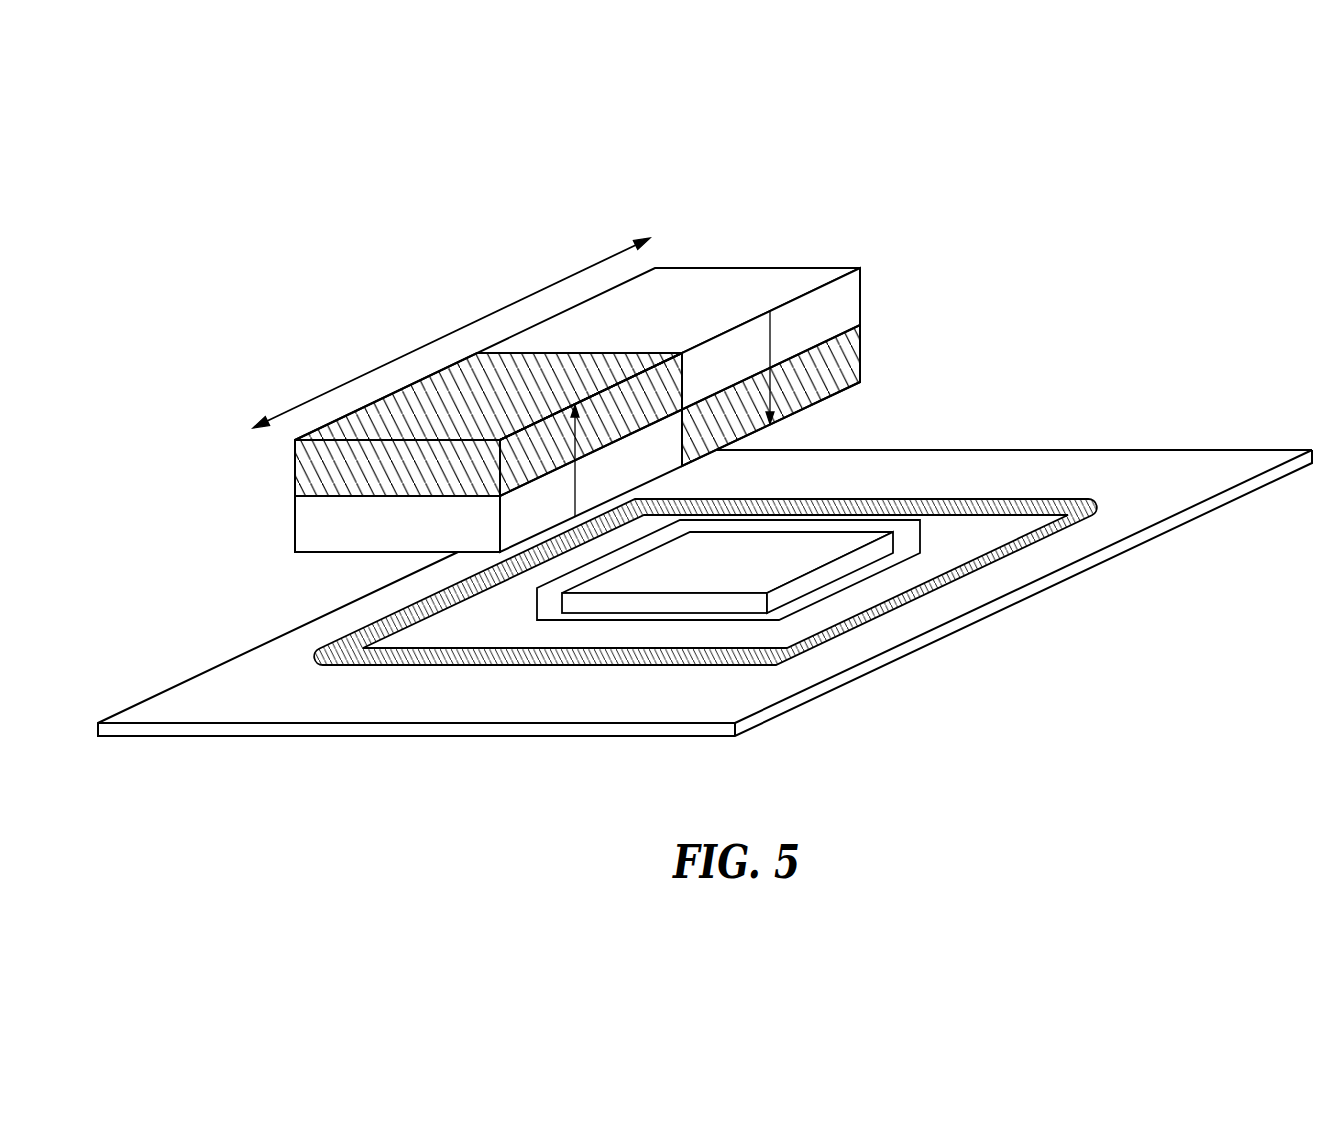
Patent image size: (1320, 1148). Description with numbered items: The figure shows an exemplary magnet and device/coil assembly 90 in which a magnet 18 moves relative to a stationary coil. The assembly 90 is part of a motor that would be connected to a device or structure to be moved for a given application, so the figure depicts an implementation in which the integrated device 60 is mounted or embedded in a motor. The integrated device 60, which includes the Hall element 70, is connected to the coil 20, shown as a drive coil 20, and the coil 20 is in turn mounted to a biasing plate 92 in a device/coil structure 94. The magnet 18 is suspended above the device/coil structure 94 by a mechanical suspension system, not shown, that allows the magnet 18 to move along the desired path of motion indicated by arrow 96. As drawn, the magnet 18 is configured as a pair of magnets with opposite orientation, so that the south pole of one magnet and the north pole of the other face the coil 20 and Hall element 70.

The magnet and device/coil assembly 90 is at (777, 139).
The magnet 18 is at (761, 265).
The arrow 96 is at (534, 291).
The device/coil structure 94 is at (988, 441).
The biasing plate 92 is at (272, 708).
The drive coil 20 is at (586, 657).
The integrated device 60 is at (710, 623).
The Hall element 70 is at (790, 566).